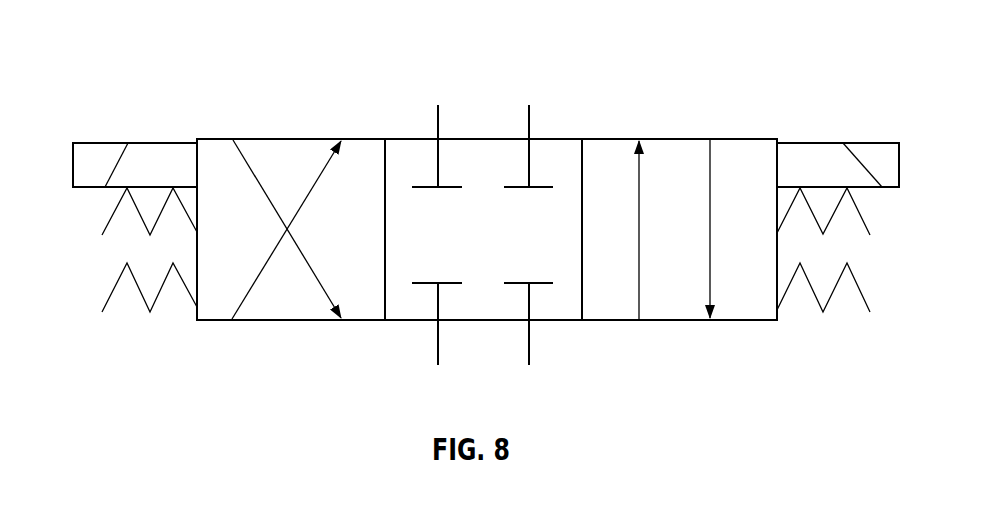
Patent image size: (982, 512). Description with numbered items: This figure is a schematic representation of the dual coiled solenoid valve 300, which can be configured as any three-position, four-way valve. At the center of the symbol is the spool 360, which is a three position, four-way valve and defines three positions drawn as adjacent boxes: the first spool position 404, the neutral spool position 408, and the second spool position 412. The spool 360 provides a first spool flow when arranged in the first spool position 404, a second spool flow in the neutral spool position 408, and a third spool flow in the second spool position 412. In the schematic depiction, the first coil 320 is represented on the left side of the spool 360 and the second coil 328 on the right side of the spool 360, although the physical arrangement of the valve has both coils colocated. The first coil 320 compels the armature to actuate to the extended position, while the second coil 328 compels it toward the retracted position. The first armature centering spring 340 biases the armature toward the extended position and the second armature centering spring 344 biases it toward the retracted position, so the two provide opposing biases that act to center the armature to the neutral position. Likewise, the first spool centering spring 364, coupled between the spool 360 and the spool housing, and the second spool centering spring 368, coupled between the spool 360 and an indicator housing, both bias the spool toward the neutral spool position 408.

The solenoid valve 300 is at (206, 62).
The first coil 320 is at (107, 152).
The second coil 328 is at (817, 155).
The first armature centering spring 340 is at (110, 221).
The second armature centering spring 344 is at (861, 218).
The second spool centering spring 368 is at (110, 297).
The first spool centering spring 364 is at (861, 291).
The second spool position 412 is at (289, 123).
The neutral spool position 408 is at (478, 124).
The first spool position 404 is at (678, 120).
The spool 360 is at (407, 346).